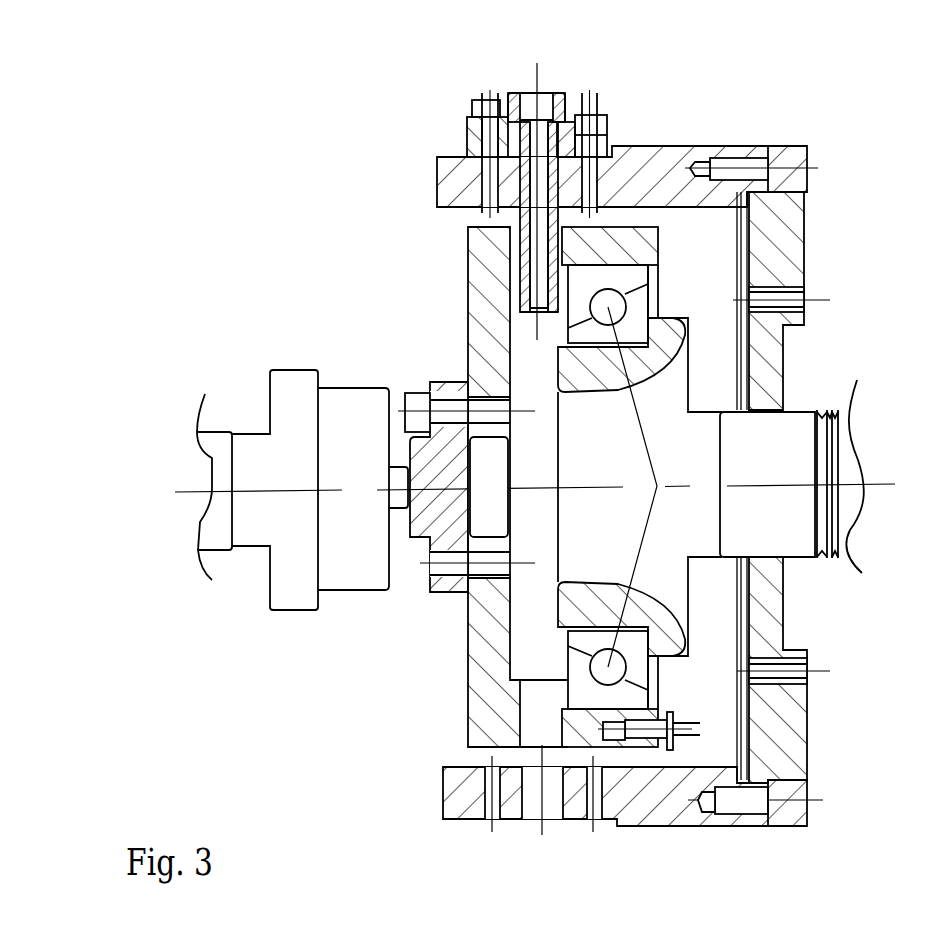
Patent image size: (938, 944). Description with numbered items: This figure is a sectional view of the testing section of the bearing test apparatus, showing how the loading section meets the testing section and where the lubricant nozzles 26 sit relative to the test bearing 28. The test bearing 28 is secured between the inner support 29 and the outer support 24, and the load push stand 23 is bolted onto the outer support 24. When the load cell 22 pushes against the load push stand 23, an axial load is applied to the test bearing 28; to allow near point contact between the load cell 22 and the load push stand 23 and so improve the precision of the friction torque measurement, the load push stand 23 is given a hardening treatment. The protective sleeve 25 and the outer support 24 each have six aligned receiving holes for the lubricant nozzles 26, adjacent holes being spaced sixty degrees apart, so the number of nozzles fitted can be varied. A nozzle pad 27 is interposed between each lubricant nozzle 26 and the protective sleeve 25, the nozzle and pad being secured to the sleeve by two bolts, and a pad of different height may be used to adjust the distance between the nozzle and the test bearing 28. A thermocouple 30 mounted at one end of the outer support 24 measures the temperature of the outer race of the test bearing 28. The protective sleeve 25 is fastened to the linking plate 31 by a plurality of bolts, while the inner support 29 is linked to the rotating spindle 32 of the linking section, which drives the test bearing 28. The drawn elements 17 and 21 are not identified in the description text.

The wheel 17 is at (215, 442).
The flange 21 is at (297, 583).
The load cell 22 is at (356, 553).
The load push stand 23 is at (440, 590).
The outer support for bearing 24 is at (487, 325).
The protective sleeve 25 is at (663, 175).
The lubricant nozzle 26 is at (595, 114).
The nozzle pad 27 is at (473, 147).
The test bearing 28 is at (632, 277).
The inner support for bearing 29 is at (655, 415).
The thermocouple 30 is at (653, 727).
The linking plate 31 is at (770, 250).
The rotating spindle 32 is at (783, 440).